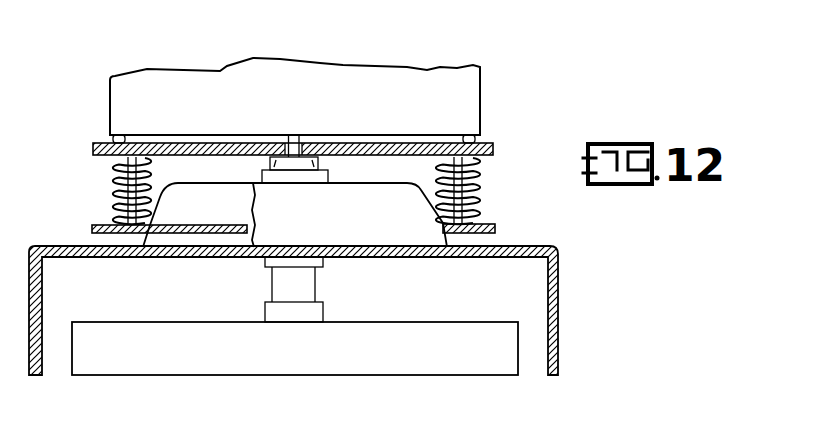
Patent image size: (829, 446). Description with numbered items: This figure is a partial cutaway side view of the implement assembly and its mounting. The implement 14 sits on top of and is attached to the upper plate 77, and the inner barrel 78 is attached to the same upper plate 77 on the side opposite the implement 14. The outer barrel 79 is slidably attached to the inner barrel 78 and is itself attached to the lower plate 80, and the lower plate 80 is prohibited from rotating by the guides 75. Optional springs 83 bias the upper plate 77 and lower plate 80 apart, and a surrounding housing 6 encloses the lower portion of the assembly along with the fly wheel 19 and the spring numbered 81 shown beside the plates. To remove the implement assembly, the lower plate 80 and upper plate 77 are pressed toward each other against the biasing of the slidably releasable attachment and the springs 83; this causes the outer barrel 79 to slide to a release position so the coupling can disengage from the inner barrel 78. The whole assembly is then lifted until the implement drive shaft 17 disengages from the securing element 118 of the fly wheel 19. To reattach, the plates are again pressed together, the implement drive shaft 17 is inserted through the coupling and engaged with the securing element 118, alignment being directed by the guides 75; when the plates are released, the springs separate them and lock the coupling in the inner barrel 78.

The implement 14 is at (447, 93).
The upper plate 77 is at (103, 143).
The outer barrel 79 is at (262, 155).
The inner barrel 78 is at (320, 143).
The guides 75 is at (180, 200).
The lower plate 80 is at (108, 224).
The spring 81 is at (470, 165).
The springs 83 is at (470, 195).
The housing 6 is at (558, 262).
The implement drive shaft 17 is at (305, 290).
The securing element 118 is at (270, 311).
The fly wheel 19 is at (437, 355).